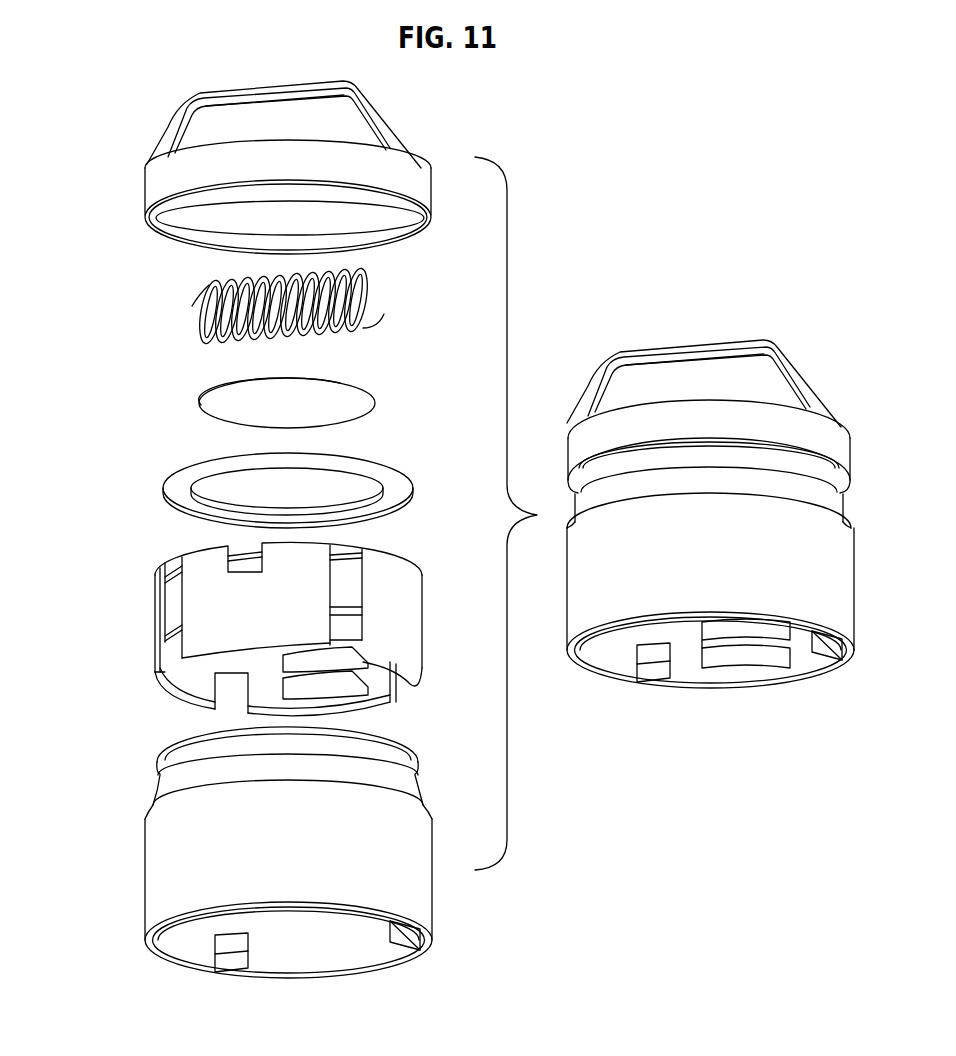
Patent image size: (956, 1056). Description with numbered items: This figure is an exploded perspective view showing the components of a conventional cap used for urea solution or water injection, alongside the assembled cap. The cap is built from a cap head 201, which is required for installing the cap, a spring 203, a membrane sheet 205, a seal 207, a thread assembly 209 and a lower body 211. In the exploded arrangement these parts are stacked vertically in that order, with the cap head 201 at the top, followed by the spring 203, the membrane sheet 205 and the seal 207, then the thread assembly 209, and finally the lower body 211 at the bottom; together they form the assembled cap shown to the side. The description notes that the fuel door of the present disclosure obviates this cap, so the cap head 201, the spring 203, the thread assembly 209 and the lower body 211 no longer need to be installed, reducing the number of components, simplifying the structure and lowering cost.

The cap head 201 is at (152, 196).
The spring 203 is at (193, 308).
The membrane sheet 205 is at (217, 405).
The seal 207 is at (188, 471).
The thread assembly 209 is at (196, 607).
The lower body 211 is at (162, 850).